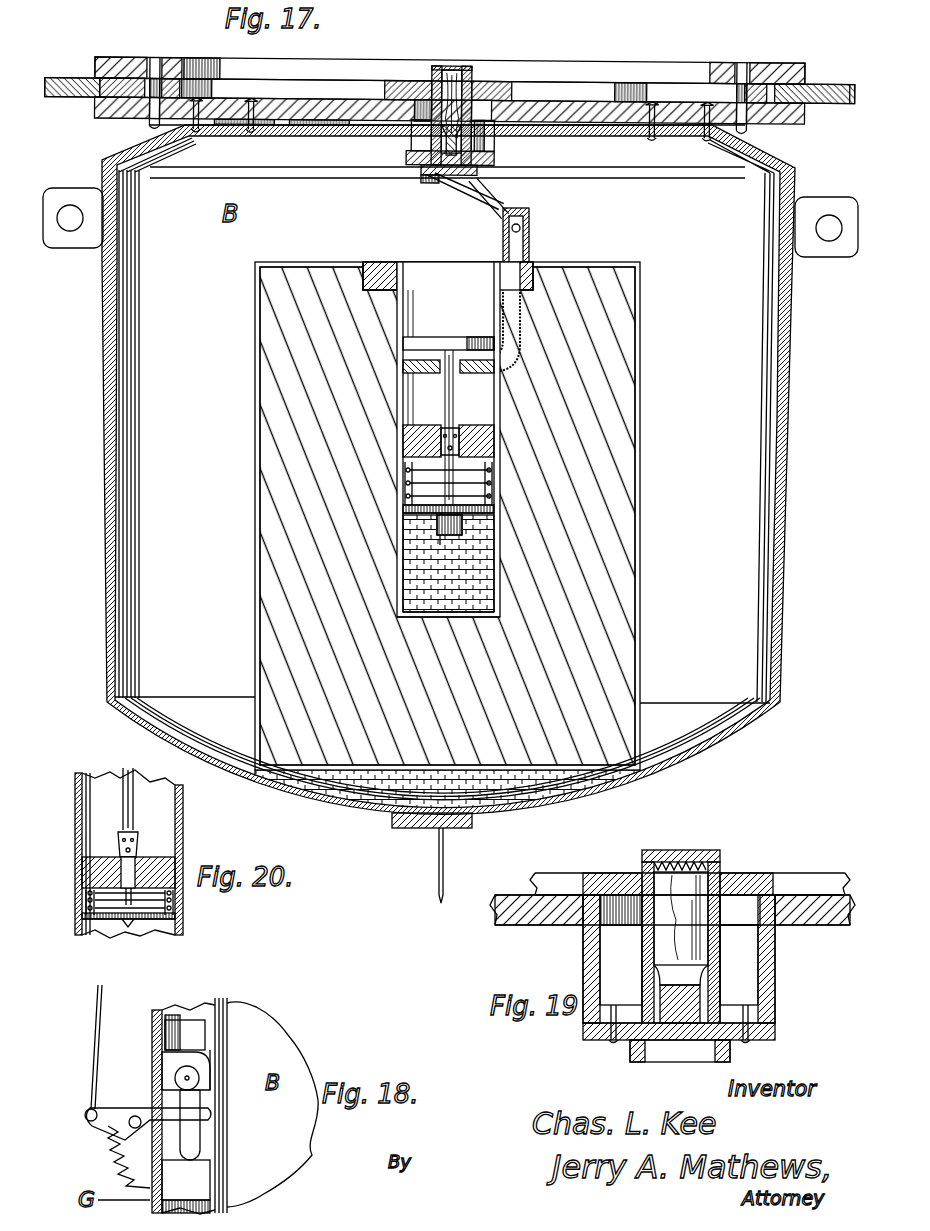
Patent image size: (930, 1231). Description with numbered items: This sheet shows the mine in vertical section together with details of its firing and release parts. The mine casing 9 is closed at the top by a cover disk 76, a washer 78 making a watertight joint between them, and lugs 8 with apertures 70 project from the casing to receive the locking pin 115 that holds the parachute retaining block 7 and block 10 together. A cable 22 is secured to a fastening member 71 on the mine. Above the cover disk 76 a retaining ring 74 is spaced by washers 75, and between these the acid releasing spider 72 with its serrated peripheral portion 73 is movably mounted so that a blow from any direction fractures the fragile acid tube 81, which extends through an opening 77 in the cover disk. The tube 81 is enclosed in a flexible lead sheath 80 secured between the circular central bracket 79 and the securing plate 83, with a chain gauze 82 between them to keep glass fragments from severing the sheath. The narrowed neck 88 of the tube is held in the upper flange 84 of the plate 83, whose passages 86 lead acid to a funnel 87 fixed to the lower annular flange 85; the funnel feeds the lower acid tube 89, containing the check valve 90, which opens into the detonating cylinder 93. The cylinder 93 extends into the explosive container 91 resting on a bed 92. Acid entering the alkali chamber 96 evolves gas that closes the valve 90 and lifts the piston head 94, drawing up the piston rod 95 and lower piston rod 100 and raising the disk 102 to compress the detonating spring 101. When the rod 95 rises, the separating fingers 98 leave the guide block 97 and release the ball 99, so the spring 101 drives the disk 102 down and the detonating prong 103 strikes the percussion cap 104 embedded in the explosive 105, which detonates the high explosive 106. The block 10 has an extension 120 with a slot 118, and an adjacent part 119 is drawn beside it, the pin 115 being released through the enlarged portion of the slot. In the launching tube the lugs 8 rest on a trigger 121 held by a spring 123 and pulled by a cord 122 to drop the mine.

In FIG. 18, the parachute retaining block 7 is at (195, 1043).
In FIG. 17, the lugs 8 is at (70, 195).
In FIG. 17, the mine casing 9 is at (763, 707).
In FIG. 18, the mine casing 9 is at (227, 1000).
In FIG. 18, the block 10 is at (200, 1178).
In FIG. 17, the cable 22 is at (438, 862).
In FIG. 17, the apertures 70 is at (70, 232).
In FIG. 18, the apertures 70 is at (213, 1058).
In FIG. 17, the fastening member 71 is at (497, 816).
In FIG. 17, the acid releasing spider 72 is at (827, 78).
In FIG. 19, the acid releasing spider 72 is at (770, 888).
In FIG. 17, the serrated peripheral portion 73 is at (850, 98).
In FIG. 17, the retaining ring 74 is at (727, 68).
In FIG. 17, the washers 75 is at (730, 88).
In FIG. 17, the cover disk 76 is at (606, 104).
In FIG. 19, the cover disk 76 is at (815, 917).
In FIG. 17, the opening 77 is at (513, 101).
In FIG. 19, the opening 77 is at (736, 913).
In FIG. 17, the washer 78 is at (660, 126).
In FIG. 17, the circular central bracket 79 is at (495, 131).
In FIG. 19, the circular central bracket 79 is at (592, 958).
In FIG. 17, the flexible lead sheath 80 is at (432, 131).
In FIG. 19, the flexible lead sheath 80 is at (722, 856).
In FIG. 17, the fragile acid tube 81 is at (450, 72).
In FIG. 19, the fragile acid tube 81 is at (650, 868).
In FIG. 17, the chain gauze 82 is at (432, 67).
In FIG. 19, the chain gauze 82 is at (681, 924).
In FIG. 17, the securing plate 83 is at (432, 158).
In FIG. 17, the upper flange 84 is at (455, 184).
In FIG. 19, the upper flange 84 is at (653, 1042).
In FIG. 17, the lower annular flange 85 is at (466, 172).
In FIG. 19, the lower annular flange 85 is at (730, 1052).
In FIG. 17, the passages 86 is at (432, 176).
In FIG. 19, the passages 86 is at (697, 1040).
In FIG. 17, the funnel 87 is at (490, 182).
In FIG. 17, the narrowed neck 88 is at (468, 63).
In FIG. 19, the narrowed neck 88 is at (681, 979).
In FIG. 17, the lower acid tube 89 is at (520, 331).
In FIG. 17, the check valve 90 is at (525, 238).
In FIG. 17, the explosive container 91 is at (500, 493).
In FIG. 17, the bed 92 is at (537, 783).
In FIG. 17, the detonating cylinder 93 is at (500, 472).
In FIG. 20, the detonating cylinder 93 is at (183, 805).
In FIG. 17, the piston head 94 is at (430, 337).
In FIG. 17, the piston rod 95 is at (453, 386).
In FIG. 20, the piston rod 95 is at (125, 801).
In FIG. 17, the alkali chamber 96 is at (467, 360).
In FIG. 17, the guide block 97 is at (485, 440).
In FIG. 20, the guide block 97 is at (85, 862).
In FIG. 17, the separating fingers 98 is at (456, 446).
In FIG. 20, the separating fingers 98 is at (136, 846).
In FIG. 17, the ball 99 is at (428, 443).
In FIG. 20, the ball 99 is at (122, 844).
In FIG. 17, the lower piston rod 100 is at (430, 483).
In FIG. 20, the lower piston rod 100 is at (127, 876).
In FIG. 17, the detonating spring 101 is at (494, 508).
In FIG. 20, the detonating spring 101 is at (90, 912).
In FIG. 17, the disk 102 is at (470, 516).
In FIG. 20, the disk 102 is at (112, 921).
In FIG. 17, the detonating prong 103 is at (497, 518).
In FIG. 20, the detonating prong 103 is at (130, 921).
In FIG. 17, the percussion cap 104 is at (437, 505).
In FIG. 17, the explosive 105 is at (440, 555).
In FIG. 17, the high explosive 106 is at (593, 665).
In FIG. 18, the locking pin 115 is at (195, 1079).
In FIG. 18, the slot 118 is at (165, 1066).
In FIG. 18, the shoulder 119 is at (195, 1105).
In FIG. 18, the extension 120 is at (200, 1145).
In FIG. 18, the trigger 121 is at (116, 1112).
In FIG. 18, the cord 122 is at (95, 991).
In FIG. 18, the spring 123 is at (115, 1155).